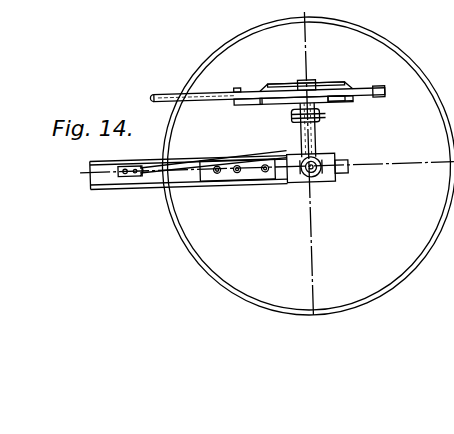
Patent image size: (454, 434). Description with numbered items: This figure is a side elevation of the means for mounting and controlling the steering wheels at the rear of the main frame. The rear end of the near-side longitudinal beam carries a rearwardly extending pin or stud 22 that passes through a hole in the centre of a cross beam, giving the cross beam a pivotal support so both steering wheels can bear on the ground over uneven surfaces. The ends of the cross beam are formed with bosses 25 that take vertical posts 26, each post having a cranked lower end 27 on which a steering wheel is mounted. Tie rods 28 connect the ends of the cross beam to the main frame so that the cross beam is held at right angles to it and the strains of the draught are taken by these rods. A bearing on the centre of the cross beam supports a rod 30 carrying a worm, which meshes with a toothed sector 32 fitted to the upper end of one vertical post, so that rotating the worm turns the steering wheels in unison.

The pin or stud 22 is at (348, 162).
The boss 25 is at (301, 130).
The vertical post 26 is at (319, 135).
The cranked lower end 27 is at (323, 181).
The tie rod 28 is at (191, 160).
The rod 30 is at (161, 94).
The toothed sector 32 is at (383, 96).